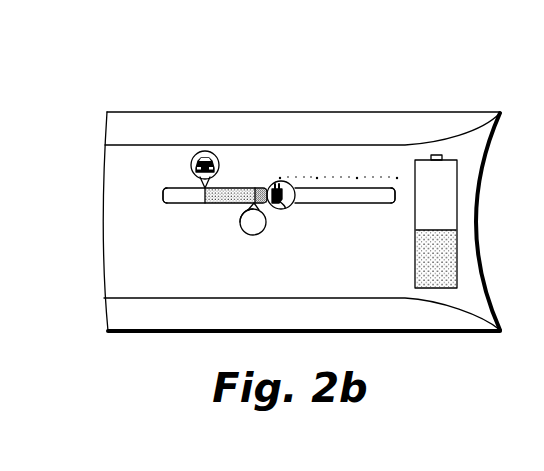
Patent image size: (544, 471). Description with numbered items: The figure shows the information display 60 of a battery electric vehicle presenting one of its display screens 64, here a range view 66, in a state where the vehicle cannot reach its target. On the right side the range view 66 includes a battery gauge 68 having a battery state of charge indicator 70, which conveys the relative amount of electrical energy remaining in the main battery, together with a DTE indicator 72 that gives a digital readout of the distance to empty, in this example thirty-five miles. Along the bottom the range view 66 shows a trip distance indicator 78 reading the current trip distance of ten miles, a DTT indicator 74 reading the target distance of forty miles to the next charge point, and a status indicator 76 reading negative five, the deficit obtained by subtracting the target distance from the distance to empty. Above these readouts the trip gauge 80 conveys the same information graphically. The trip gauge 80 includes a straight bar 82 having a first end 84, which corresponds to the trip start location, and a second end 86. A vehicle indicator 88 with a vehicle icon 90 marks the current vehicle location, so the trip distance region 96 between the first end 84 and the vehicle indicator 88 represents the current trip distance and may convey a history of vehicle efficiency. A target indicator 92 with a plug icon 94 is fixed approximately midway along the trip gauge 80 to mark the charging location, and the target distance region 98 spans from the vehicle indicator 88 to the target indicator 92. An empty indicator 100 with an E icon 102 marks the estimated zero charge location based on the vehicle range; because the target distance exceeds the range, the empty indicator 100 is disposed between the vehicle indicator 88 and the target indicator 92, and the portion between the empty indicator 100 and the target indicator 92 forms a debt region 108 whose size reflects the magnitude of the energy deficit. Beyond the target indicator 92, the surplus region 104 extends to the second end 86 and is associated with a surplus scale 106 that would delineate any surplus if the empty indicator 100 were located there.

The information display 60 is at (118, 68).
The display screen 64 is at (103, 307).
The range view 66 is at (123, 233).
The battery gauge 68 is at (447, 157).
The battery state of charge indicator 70 is at (456, 223).
The DTE indicator 72 is at (453, 245).
The DTT indicator 74 is at (270, 300).
The status indicator 76 is at (368, 300).
The trip distance indicator 78 is at (188, 300).
The trip gauge 80 is at (118, 183).
The bar 82 is at (248, 190).
The first end 84 is at (163, 196).
The second end 86 is at (396, 195).
The vehicle indicator 88 is at (178, 193).
The vehicle icon 90 is at (205, 151).
The target indicator 92 is at (283, 209).
The plug icon 94 is at (288, 182).
The trip distance region 96 is at (176, 190).
The target distance region 98 is at (235, 190).
The empty indicator 100 is at (240, 223).
The E icon 102 is at (253, 235).
The surplus region 104 is at (338, 193).
The surplus scale 106 is at (360, 153).
The debt region 108 is at (262, 189).